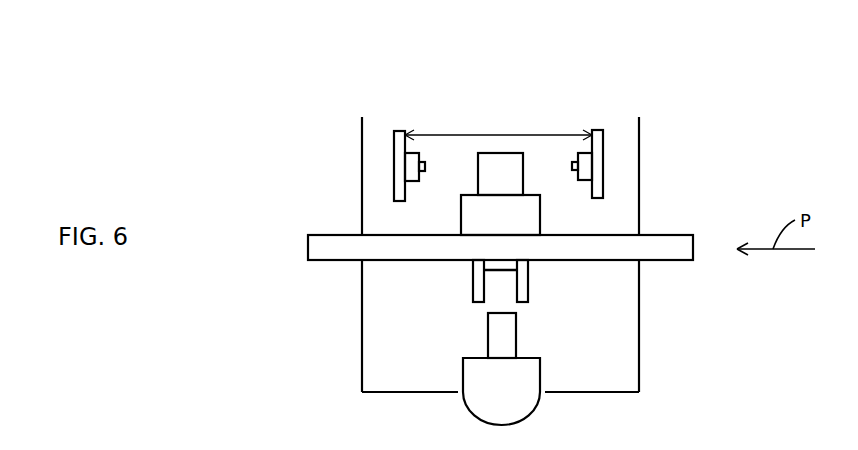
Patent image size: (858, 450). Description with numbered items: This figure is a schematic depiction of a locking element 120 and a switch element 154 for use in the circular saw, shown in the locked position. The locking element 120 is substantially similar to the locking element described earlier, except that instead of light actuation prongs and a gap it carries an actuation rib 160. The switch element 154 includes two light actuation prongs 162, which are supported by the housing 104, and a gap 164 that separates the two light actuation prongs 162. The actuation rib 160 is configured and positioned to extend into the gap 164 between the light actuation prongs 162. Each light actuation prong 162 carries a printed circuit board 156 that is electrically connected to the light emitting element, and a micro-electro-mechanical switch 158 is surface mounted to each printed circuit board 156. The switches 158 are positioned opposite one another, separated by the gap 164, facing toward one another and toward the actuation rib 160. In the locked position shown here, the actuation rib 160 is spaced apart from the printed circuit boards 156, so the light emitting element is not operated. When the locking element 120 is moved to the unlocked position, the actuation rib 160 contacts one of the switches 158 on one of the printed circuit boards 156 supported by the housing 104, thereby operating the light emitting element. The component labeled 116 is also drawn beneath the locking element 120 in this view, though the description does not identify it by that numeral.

The housing 104 is at (643, 368).
The tool holder 116 is at (522, 398).
The locking element 120 is at (590, 248).
The switch element 154 is at (580, 104).
The printed circuit board 156 is at (400, 172).
The micro-electro-mechanical switch 158 is at (408, 173).
The actuation rib 160 is at (510, 177).
The light actuation prongs 162 is at (397, 142).
The gap 164 is at (465, 135).